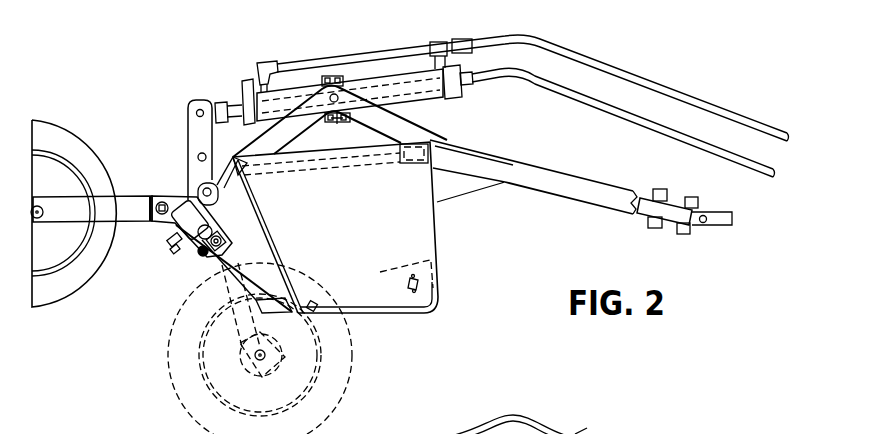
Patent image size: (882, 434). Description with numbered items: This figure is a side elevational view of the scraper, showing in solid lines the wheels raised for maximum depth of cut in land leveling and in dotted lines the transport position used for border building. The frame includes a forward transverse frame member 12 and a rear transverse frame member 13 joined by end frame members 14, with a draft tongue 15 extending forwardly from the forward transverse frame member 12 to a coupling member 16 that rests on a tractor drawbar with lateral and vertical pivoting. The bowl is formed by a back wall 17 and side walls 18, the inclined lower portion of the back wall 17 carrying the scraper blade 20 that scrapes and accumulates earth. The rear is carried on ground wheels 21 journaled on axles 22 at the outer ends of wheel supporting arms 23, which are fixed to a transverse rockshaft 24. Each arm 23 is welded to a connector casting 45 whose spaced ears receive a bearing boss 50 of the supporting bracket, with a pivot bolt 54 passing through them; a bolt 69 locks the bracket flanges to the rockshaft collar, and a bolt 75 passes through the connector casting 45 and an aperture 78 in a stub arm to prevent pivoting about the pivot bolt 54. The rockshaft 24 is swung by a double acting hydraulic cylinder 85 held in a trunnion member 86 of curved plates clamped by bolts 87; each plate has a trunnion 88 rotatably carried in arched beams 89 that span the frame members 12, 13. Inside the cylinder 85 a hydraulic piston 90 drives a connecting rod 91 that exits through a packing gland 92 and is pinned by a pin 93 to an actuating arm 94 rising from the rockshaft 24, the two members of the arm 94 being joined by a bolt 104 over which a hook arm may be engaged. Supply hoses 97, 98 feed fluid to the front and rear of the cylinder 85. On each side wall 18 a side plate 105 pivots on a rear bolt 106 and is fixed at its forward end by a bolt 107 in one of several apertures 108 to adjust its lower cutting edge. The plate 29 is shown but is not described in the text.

The forward transverse frame member 12 is at (422, 140).
The rear transverse frame member 13 is at (250, 177).
The end frame member 14 is at (345, 173).
The draft tongue 15 is at (580, 195).
The coupling member 16 is at (712, 221).
The back wall 17 is at (200, 182).
The side wall 18 is at (425, 240).
The scraper blade 20 is at (292, 316).
The ground wheel 21 is at (68, 290).
The axle 22 is at (38, 218).
The wheel supporting arm 23 is at (66, 208).
The rockshaft 24 is at (203, 234).
The pivot plate 29 is at (216, 183).
The connector casting 45 is at (183, 196).
The bearing boss 50 is at (195, 208).
The pivot bolt 54 is at (171, 245).
The bolt 69 is at (201, 253).
The bolt 75 is at (161, 214).
The aperture 78 is at (224, 242).
The double acting hydraulic cylinder 85 is at (395, 80).
The trunnion member 86 is at (335, 127).
The bolt 87 is at (338, 78).
The trunnion 88 is at (338, 99).
The arched beam 89 is at (427, 121).
The hydraulic piston 90 is at (459, 88).
The connecting rod 91 is at (289, 97).
The packing gland 92 is at (228, 101).
The pin 93 is at (200, 110).
The actuating arm 94 is at (200, 125).
The supply hose 97 is at (567, 92).
The supply hose 98 is at (645, 84).
The bolt 104 is at (201, 153).
The side plate 105 is at (406, 313).
The bolt 106 is at (313, 302).
The bolt 107 is at (419, 283).
The aperture 108 is at (402, 281).